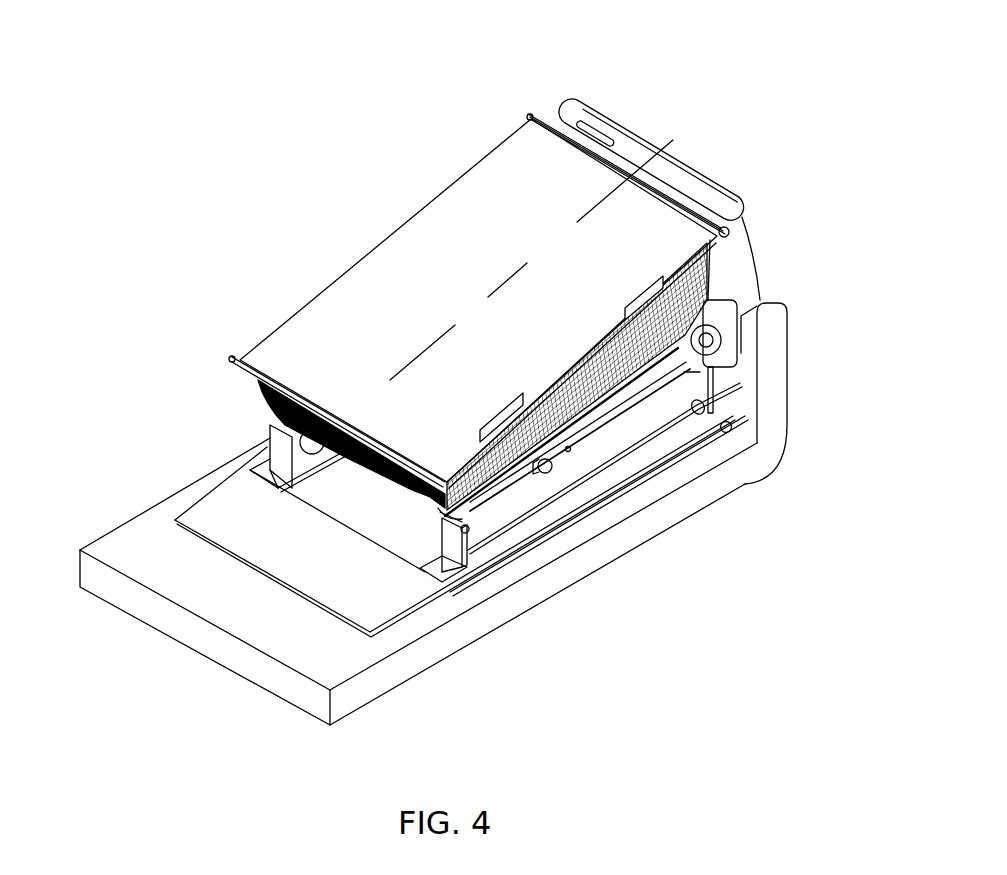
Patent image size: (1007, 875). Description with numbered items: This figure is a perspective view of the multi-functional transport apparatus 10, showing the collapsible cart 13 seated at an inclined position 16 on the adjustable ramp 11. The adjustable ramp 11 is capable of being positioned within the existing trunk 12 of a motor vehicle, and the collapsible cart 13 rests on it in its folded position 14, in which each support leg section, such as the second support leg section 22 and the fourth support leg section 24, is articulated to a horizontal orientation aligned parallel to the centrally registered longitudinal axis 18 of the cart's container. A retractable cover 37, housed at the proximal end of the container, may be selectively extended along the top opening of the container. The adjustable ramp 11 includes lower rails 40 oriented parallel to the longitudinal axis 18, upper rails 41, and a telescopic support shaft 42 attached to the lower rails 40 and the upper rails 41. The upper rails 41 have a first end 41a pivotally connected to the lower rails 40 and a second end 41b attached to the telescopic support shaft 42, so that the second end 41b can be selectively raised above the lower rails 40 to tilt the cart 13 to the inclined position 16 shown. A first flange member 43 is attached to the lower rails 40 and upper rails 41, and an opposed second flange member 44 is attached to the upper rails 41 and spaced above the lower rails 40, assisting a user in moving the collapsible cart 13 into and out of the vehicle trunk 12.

The multi-functional transport apparatus 10 is at (252, 101).
The adjustable ramp 11 is at (540, 547).
The existing trunk 12 is at (707, 497).
The collapsible cart 13 is at (685, 128).
The folded position 14 is at (385, 225).
The inclined position 16 is at (746, 259).
The centrally registered longitudinal axis 18 is at (238, 508).
The second support leg section 22 is at (437, 518).
The fourth support leg section 24 is at (695, 366).
The retractable cover 37 is at (499, 150).
The lower rails 40 is at (323, 455).
The upper rails 41 is at (603, 438).
The first end 41a is at (270, 472).
The second end 41b is at (738, 305).
The telescopic support shaft 42 is at (723, 367).
The first flange member 43 is at (367, 607).
The second flange member 44 is at (718, 320).